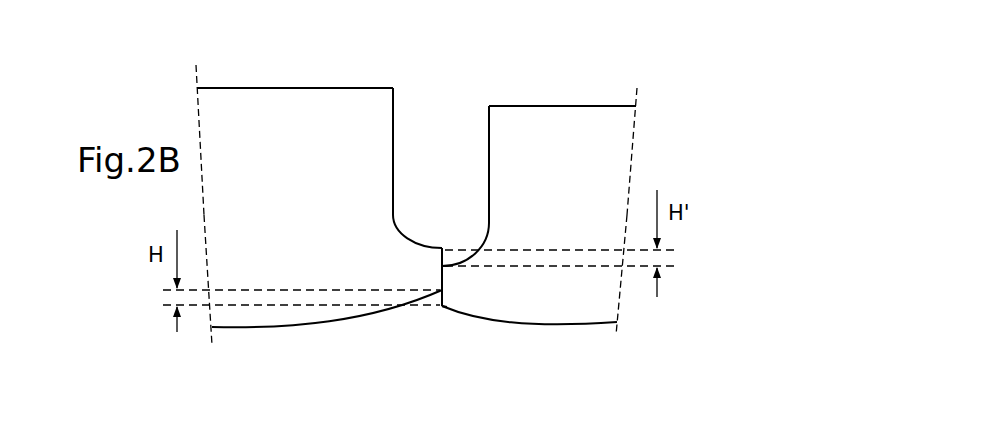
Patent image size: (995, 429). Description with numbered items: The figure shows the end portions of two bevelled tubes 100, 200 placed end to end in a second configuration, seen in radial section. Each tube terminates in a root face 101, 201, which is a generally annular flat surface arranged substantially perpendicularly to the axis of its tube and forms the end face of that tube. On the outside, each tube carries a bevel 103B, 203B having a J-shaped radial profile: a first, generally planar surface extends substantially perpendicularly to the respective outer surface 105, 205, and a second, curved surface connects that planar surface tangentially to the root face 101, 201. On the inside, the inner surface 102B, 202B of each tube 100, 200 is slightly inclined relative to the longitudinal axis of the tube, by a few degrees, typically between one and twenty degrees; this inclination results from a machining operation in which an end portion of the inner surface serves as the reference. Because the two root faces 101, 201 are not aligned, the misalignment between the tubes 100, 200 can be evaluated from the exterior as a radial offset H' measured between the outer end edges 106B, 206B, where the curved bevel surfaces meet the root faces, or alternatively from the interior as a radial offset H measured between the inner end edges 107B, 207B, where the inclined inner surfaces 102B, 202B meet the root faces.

The outer surface 105 is at (294, 86).
The bevel 103B is at (392, 118).
The outer surface 205 is at (557, 105).
The bevel 203B is at (488, 148).
The outer end edge 106B is at (444, 246).
The root face 101 is at (443, 265).
The outer end edge 206B is at (439, 263).
The root face 201 is at (440, 289).
The inner end edge 107B is at (435, 297).
The inner end edge 207B is at (442, 310).
The bevelled tube 100 is at (267, 316).
The inner surface 102B is at (322, 326).
The bevelled tube 200 is at (568, 307).
The inner surface 202B is at (495, 320).